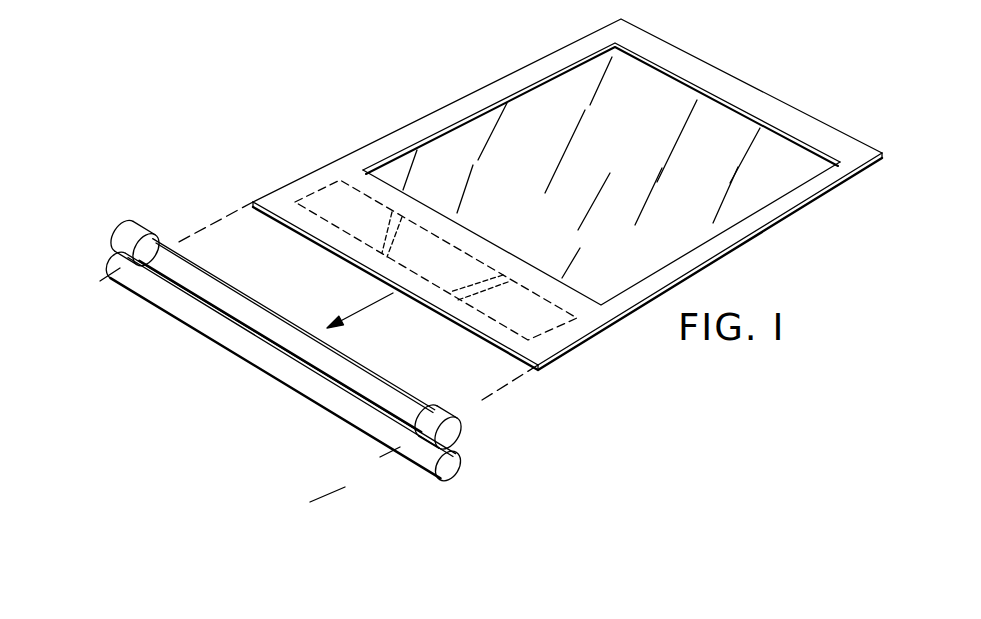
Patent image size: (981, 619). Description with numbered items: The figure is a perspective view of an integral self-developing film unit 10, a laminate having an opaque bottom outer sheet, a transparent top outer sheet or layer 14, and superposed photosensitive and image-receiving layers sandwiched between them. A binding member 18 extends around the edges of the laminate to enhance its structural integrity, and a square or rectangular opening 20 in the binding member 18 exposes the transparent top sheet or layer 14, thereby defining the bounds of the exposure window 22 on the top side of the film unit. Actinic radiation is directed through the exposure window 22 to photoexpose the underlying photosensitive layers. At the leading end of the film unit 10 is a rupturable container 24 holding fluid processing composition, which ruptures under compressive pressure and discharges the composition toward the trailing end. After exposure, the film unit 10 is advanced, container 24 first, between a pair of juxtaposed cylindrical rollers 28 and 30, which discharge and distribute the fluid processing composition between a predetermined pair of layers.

The integral self-developing film unit 10 is at (340, 143).
The transparent top outer sheet or layer 14 is at (480, 140).
The binding member 18 is at (562, 58).
The opening 20 is at (405, 148).
The exposure window 22 is at (640, 138).
The rupturable container 24 is at (323, 188).
The cylindrical roller 28 is at (455, 432).
The cylindrical roller 30 is at (456, 466).